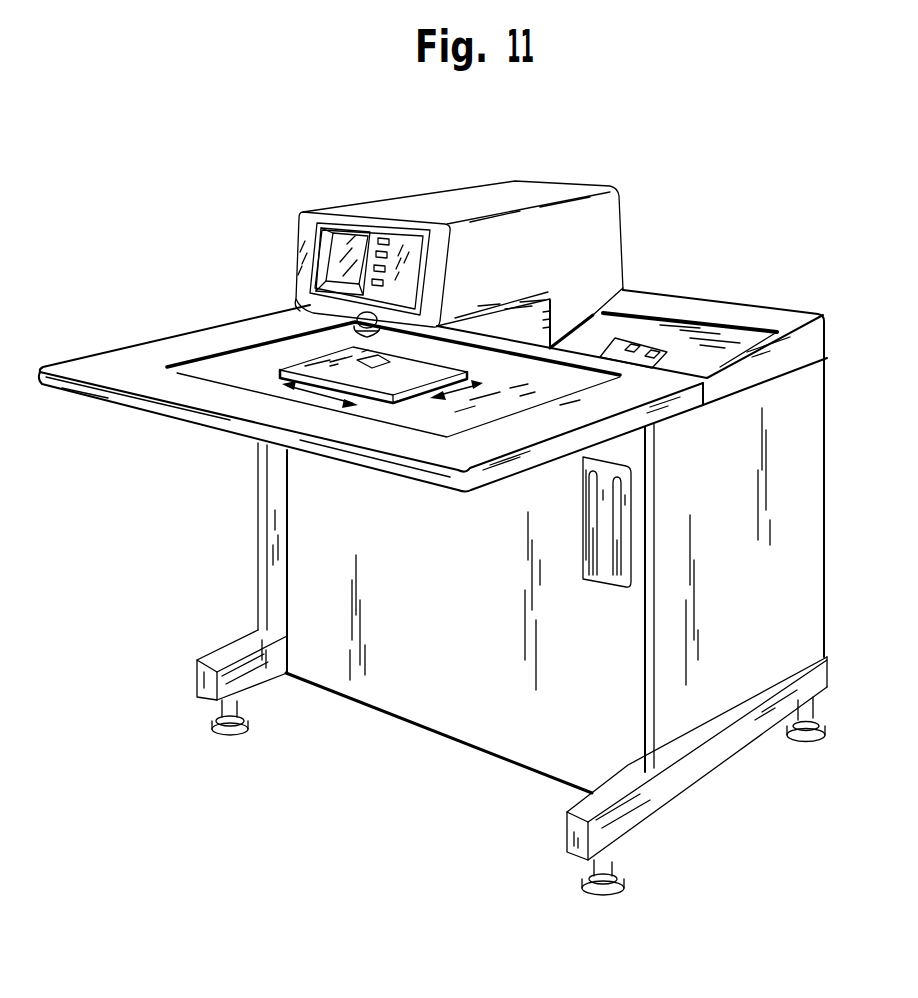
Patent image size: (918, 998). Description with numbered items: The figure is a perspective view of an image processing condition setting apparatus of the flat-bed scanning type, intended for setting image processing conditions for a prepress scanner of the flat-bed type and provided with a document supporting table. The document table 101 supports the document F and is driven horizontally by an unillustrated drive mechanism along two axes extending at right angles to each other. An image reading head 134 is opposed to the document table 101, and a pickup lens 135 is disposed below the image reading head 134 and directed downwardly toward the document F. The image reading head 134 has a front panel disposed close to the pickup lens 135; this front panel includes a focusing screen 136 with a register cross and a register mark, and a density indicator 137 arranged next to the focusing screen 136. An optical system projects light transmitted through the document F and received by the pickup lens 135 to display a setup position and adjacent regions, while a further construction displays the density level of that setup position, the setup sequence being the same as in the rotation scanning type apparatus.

The document table 101 is at (344, 399).
The image reading head 134 is at (434, 232).
The pickup lens 135 is at (373, 233).
The focusing screen 136 is at (345, 226).
The density indicator 137 is at (397, 238).
The document F is at (292, 368).